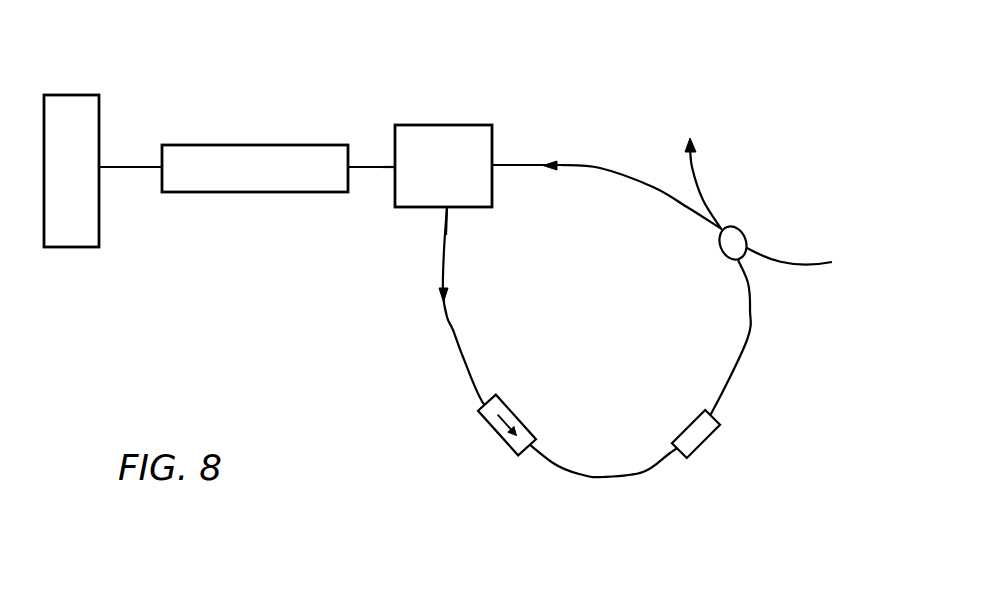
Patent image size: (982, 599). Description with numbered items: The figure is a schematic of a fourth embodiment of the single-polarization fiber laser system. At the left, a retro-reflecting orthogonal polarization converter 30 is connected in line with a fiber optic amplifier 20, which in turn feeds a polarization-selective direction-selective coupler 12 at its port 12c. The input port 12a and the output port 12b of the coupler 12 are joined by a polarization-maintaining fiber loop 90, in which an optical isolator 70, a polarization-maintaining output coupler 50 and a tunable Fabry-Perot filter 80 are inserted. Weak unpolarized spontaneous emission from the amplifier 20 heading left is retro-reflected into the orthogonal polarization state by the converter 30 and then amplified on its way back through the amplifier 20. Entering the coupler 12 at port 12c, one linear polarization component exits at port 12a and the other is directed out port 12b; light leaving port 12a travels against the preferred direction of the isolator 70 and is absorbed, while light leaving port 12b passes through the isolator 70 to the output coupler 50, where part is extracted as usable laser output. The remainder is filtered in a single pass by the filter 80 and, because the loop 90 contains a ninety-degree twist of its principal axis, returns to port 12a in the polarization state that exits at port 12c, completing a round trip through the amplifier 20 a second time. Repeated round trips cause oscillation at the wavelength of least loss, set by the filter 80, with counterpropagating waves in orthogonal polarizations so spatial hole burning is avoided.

The polarization-selective direction-selective coupler 12 is at (427, 75).
The input port 12a is at (492, 165).
The output port 12b is at (448, 215).
The port 12c is at (395, 165).
The fiber optic amplifier 20 is at (253, 100).
The retro-reflecting orthogonal polarization converter 30 is at (78, 50).
The polarization-maintaining output coupler 50 is at (740, 228).
The optical isolator 70 is at (497, 433).
The Fabry-Perot filter 80 is at (712, 442).
The polarization-maintaining fiber loop 90 is at (645, 472).